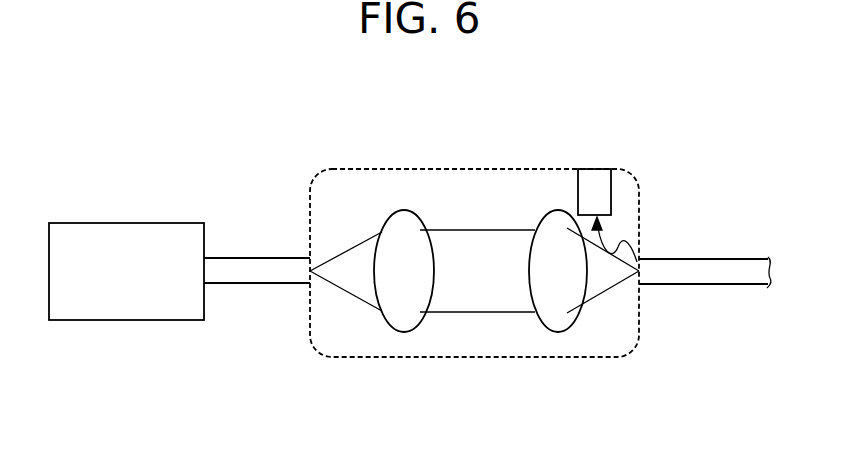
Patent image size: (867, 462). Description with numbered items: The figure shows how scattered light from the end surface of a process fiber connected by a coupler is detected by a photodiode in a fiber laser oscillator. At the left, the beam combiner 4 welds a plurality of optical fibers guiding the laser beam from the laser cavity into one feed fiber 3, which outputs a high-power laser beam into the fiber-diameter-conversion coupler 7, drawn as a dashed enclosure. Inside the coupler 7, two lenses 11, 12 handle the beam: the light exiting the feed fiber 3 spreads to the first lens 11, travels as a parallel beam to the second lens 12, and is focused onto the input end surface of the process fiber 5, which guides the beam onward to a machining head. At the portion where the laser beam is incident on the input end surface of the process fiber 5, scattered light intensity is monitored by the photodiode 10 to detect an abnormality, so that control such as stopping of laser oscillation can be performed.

The feed fiber 3 is at (248, 258).
The beam combiner 4 is at (138, 223).
The process fiber 5 is at (716, 259).
The fiber-diameter-conversion coupler 7 is at (508, 158).
The photodiode 10 is at (605, 191).
The lens 11 is at (400, 320).
The lens 12 is at (553, 320).